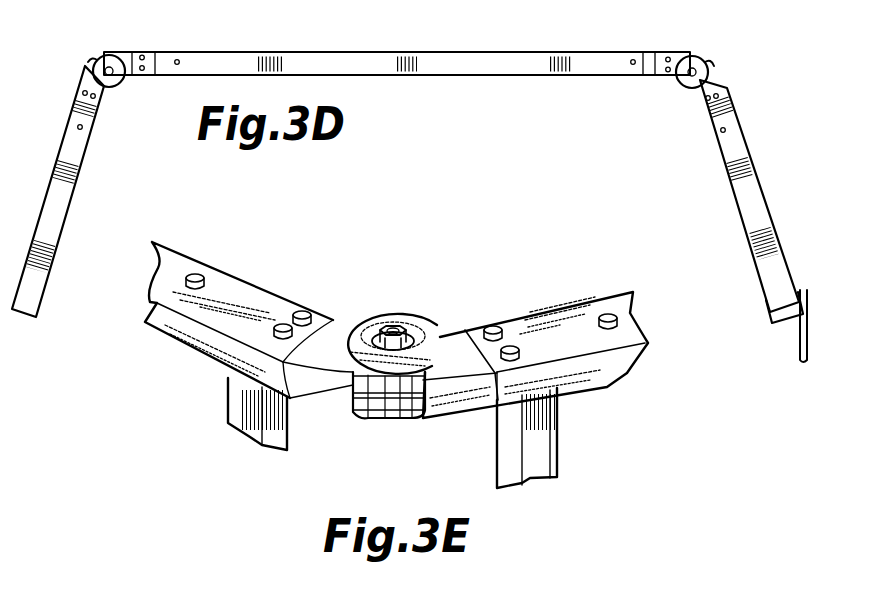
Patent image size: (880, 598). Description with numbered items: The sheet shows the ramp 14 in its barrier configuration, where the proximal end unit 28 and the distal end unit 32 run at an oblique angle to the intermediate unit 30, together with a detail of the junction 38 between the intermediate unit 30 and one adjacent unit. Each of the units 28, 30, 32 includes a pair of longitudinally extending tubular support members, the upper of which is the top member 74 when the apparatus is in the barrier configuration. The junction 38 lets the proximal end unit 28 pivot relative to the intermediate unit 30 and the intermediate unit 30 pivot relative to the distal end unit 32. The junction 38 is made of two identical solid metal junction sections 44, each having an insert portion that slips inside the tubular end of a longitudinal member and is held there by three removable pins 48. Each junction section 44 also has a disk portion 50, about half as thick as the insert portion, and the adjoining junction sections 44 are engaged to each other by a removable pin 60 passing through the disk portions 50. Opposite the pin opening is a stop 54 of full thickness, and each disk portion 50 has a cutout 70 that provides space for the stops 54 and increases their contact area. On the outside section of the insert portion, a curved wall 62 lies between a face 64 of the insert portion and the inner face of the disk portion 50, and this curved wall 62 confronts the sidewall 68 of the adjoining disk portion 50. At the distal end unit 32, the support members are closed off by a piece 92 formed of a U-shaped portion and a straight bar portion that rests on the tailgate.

In FIG. 3D, the ramp 14 is at (240, 50).
In FIG. 3D, the proximal end unit 28 is at (50, 174).
In FIG. 3D, the intermediate unit 30 is at (527, 77).
In FIG. 3D, the distal end unit 32 is at (742, 147).
In FIG. 3D, the junction 38 is at (88, 66).
In FIG. 3E, the junction 38 is at (416, 307).
In FIG. 3E, the junction section 44 is at (337, 413).
In FIG. 3E, the removable pin 48 is at (610, 310).
In FIG. 3E, the disk portion 50 is at (382, 320).
In FIG. 3E, the stop 54 is at (368, 410).
In FIG. 3E, the removable pin 60 is at (410, 333).
In FIG. 3E, the curved wall 62 is at (297, 393).
In FIG. 3E, the face 64 is at (317, 348).
In FIG. 3E, the sidewall 68 is at (387, 418).
In FIG. 3E, the cutout 70 is at (440, 337).
In FIG. 3E, the top member 74 is at (213, 360).
In FIG. 3D, the piece 92 is at (805, 293).